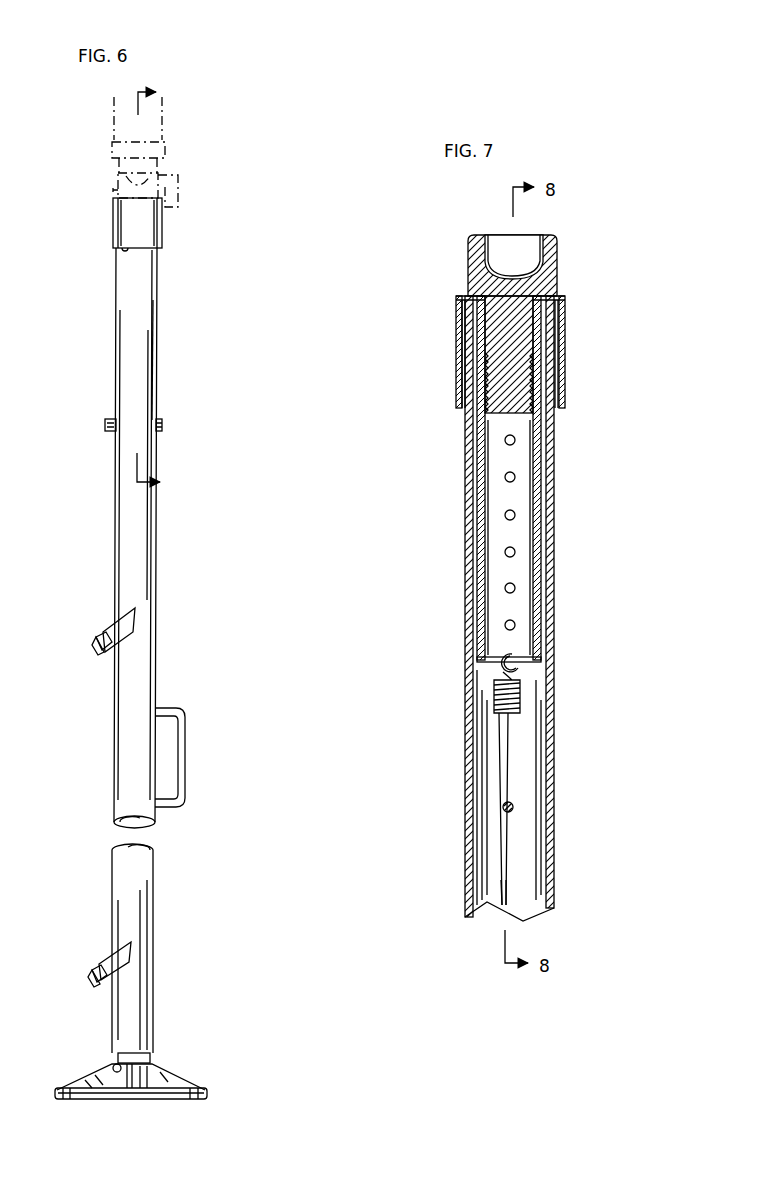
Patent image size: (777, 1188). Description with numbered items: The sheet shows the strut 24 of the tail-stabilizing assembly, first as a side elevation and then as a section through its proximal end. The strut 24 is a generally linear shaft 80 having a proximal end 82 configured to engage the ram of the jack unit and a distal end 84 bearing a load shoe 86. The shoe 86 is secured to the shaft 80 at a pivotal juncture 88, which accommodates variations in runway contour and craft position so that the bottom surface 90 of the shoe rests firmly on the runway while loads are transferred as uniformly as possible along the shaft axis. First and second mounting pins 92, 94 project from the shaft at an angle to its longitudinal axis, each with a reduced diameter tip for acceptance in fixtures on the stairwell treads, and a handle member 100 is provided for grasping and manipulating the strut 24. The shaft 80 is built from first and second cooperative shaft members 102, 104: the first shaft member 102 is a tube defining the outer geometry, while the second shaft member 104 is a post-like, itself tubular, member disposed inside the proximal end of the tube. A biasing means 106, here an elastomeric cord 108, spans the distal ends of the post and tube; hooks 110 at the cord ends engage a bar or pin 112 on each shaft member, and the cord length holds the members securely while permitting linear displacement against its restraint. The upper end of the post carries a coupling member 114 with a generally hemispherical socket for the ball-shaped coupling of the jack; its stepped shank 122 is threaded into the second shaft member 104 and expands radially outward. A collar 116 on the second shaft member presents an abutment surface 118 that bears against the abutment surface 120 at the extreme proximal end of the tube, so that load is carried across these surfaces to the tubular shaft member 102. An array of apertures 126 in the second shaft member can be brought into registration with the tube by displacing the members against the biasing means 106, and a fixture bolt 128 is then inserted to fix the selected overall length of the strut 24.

In FIG. 6, the strut 24 is at (105, 494).
In FIG. 6, the collar 116 is at (163, 223).
In FIG. 7, the collar 116 is at (566, 350).
In FIG. 6, the proximal end 82 is at (160, 272).
In FIG. 6, the shaft 80 is at (156, 351).
In FIG. 6, the fixture bolt 128 is at (163, 425).
In FIG. 7, the fixture bolt 128 is at (514, 805).
In FIG. 6, the first mounting pin 92 is at (103, 632).
In FIG. 6, the handle member 100 is at (185, 747).
In FIG. 6, the second mounting pin 94 is at (104, 963).
In FIG. 6, the distal end 84 is at (154, 1030).
In FIG. 6, the pivotal juncture 88 is at (114, 1063).
In FIG. 6, the load shoe 86 is at (187, 1078).
In FIG. 6, the bottom surface 90 is at (167, 1098).
In FIG. 7, the coupling member 114 is at (558, 270).
In FIG. 7, the abutment surface 120 is at (467, 272).
In FIG. 7, the abutment surface 118 is at (566, 314).
In FIG. 7, the shank 122 is at (490, 416).
In FIG. 7, the apertures 126 is at (516, 515).
In FIG. 7, the second shaft member 104 is at (541, 601).
In FIG. 7, the bar or pin 112 is at (512, 654).
In FIG. 7, the hooks 110 is at (524, 666).
In FIG. 7, the biasing means 106 is at (515, 755).
In FIG. 7, the first shaft member 102 is at (551, 791).
In FIG. 7, the elastomeric cord 108 is at (504, 878).